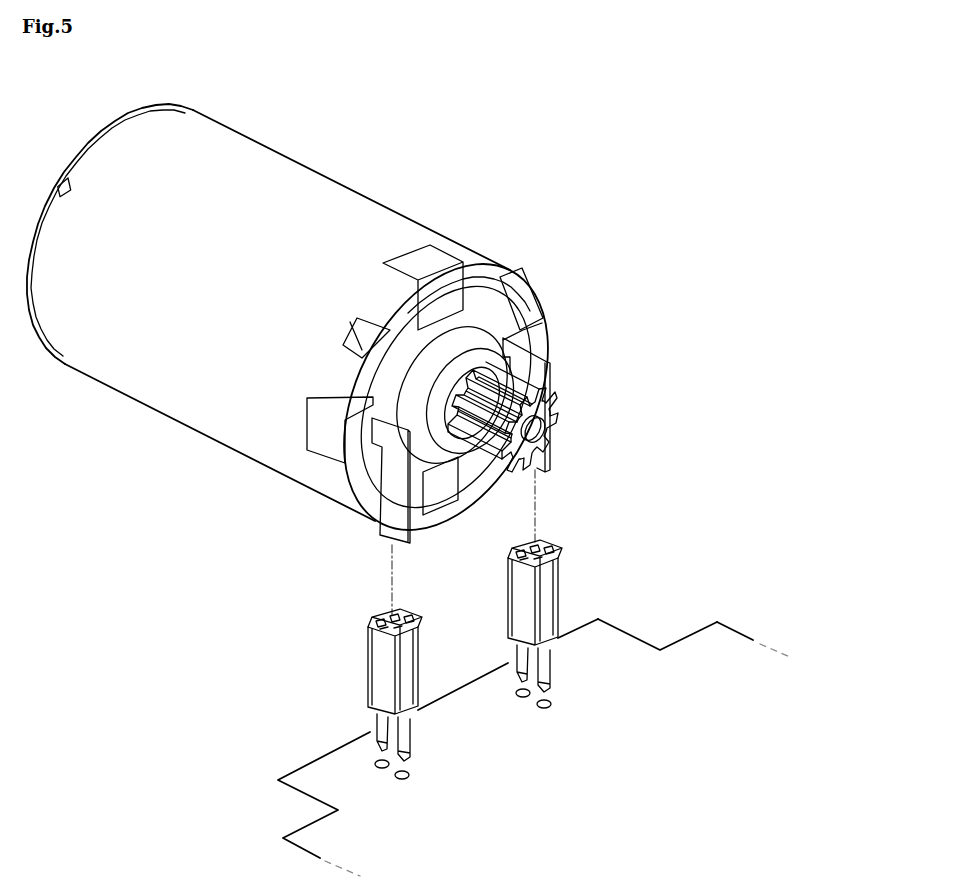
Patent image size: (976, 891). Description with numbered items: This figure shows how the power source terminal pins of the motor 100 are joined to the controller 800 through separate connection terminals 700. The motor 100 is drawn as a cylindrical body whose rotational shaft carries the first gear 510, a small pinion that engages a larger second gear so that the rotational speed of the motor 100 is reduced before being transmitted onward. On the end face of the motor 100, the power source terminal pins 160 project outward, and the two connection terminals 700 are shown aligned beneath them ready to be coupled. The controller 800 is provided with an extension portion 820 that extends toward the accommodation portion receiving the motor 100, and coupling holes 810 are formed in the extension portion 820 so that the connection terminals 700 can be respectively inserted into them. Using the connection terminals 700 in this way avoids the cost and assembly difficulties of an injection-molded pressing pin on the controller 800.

The motor 100 is at (337, 163).
The power source terminal pins 160 is at (555, 370).
The first gear 510 is at (555, 420).
The connection terminals 700 is at (552, 549).
The controller 800 is at (727, 622).
The coupling holes 810 is at (394, 776).
The extension portion 820 is at (622, 628).